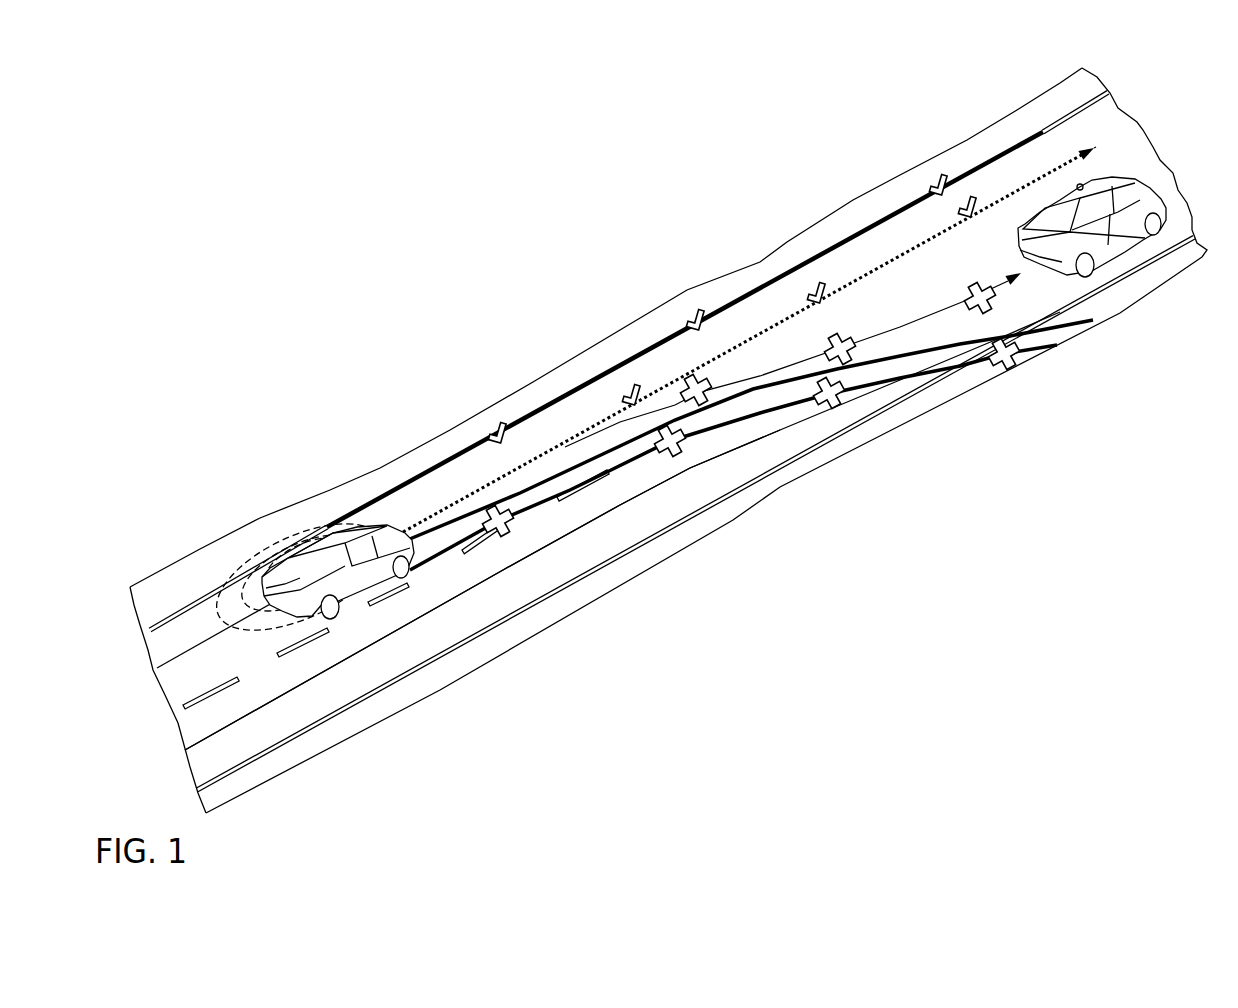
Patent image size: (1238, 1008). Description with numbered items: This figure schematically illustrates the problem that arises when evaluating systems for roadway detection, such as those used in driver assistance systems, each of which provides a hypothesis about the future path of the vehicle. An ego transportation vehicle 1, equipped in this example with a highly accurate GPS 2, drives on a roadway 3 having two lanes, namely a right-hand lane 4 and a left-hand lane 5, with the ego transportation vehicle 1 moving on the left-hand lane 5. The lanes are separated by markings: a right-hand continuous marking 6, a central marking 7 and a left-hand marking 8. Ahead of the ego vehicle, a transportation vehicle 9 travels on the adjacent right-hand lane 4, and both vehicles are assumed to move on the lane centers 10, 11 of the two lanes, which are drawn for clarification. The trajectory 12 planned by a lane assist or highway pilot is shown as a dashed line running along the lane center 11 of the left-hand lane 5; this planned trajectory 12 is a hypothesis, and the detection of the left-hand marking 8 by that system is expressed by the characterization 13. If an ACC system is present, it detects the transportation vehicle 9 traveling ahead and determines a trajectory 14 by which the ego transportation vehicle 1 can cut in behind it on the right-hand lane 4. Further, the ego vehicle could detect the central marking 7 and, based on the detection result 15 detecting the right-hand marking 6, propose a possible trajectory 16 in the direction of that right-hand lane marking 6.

The ego transportation vehicle 1 is at (386, 538).
The highly accurate GPS 2 is at (222, 565).
The roadway 3 is at (793, 522).
The right-hand lane 4 is at (607, 540).
The left-hand lane 5 is at (192, 635).
The right-hand continuous marking 6 is at (898, 398).
The central marking 7 is at (216, 688).
The left-hand marking 8 is at (1060, 124).
The transportation vehicle traveling ahead 9 is at (1135, 230).
The lane center 10 is at (392, 637).
The lane center 11 is at (1112, 135).
The trajectory 12 is at (737, 343).
The characterization 13 is at (433, 474).
The trajectory 14 is at (565, 447).
The detection result 15 is at (1025, 350).
The possible trajectory 16 is at (1083, 322).